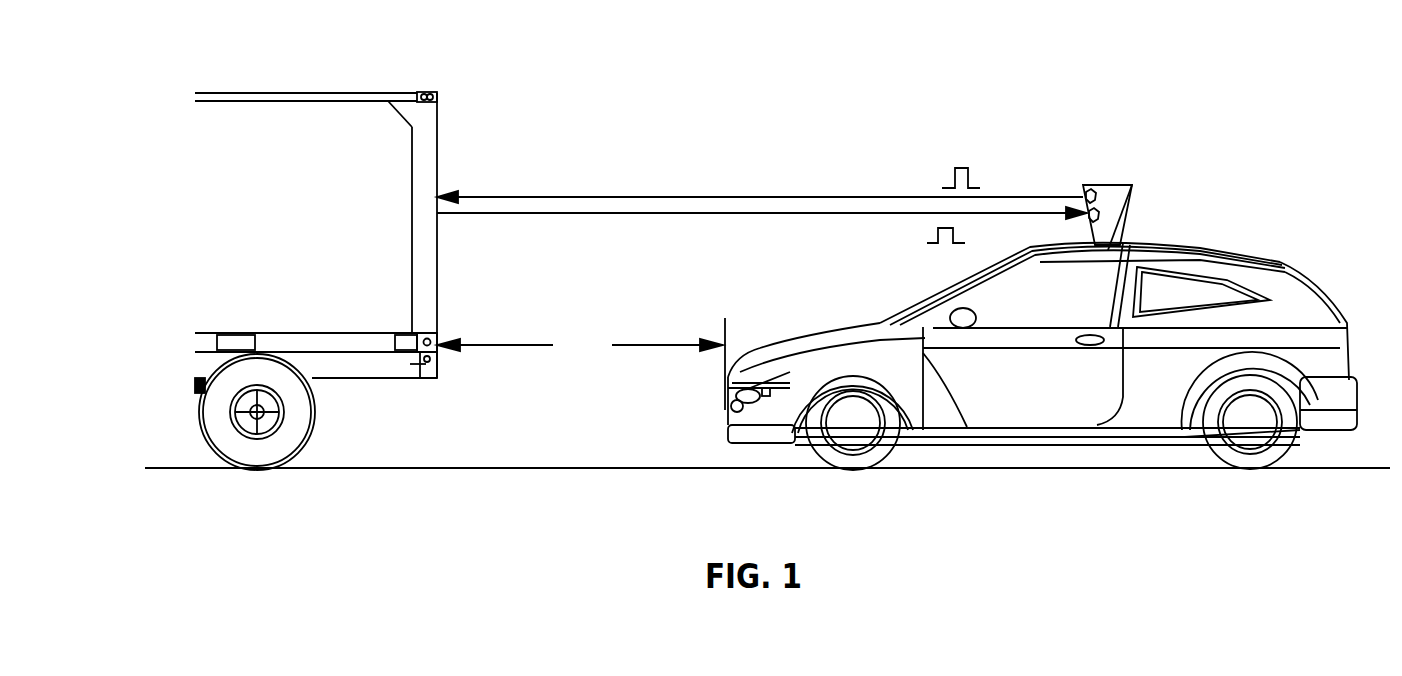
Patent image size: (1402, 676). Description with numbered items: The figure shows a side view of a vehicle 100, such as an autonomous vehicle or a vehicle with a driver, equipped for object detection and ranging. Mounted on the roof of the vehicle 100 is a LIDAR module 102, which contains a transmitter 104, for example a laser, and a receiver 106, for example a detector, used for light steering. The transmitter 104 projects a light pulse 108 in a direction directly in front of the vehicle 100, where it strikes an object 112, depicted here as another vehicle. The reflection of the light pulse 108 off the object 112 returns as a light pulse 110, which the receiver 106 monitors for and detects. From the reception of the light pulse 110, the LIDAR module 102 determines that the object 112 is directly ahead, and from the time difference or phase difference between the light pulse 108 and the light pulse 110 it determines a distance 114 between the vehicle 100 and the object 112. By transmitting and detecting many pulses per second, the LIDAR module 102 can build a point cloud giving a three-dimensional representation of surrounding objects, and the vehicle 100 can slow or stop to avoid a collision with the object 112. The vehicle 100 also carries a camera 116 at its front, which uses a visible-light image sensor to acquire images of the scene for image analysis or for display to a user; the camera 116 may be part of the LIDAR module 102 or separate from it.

The vehicle 100 is at (1227, 255).
The LIDAR module 102 is at (1130, 190).
The transmitter 104 is at (1087, 185).
The receiver 106 is at (1100, 215).
The light pulse 108 is at (962, 168).
The light pulse 110 is at (932, 236).
The object 112 is at (392, 93).
The distance 114 is at (581, 364).
The camera 116 is at (733, 405).